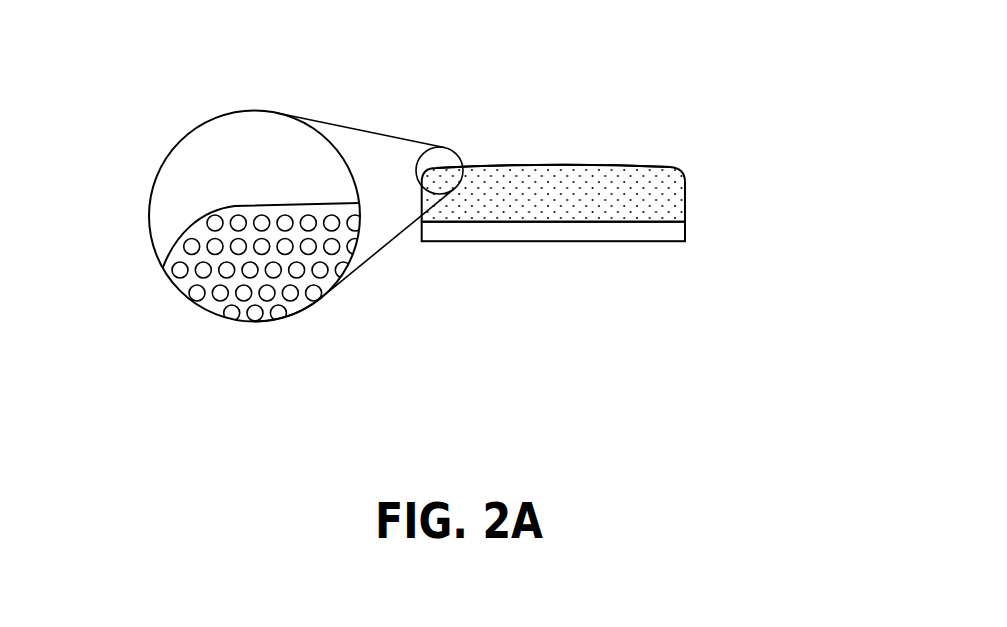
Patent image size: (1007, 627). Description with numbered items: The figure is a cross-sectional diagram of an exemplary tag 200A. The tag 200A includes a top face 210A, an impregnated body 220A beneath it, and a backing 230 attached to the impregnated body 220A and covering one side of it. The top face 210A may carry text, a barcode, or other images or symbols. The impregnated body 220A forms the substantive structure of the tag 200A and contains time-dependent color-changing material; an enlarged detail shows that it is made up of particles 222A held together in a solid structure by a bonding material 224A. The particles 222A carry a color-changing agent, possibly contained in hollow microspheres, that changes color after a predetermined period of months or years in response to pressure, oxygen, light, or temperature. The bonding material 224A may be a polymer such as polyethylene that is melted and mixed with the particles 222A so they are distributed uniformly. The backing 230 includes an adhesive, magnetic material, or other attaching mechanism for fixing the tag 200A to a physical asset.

The tag 200A is at (632, 83).
The top face 210A is at (633, 167).
The impregnated body 220A is at (658, 195).
The particles 222A is at (227, 268).
The bonding material 224A is at (300, 303).
The backing 230 is at (667, 230).